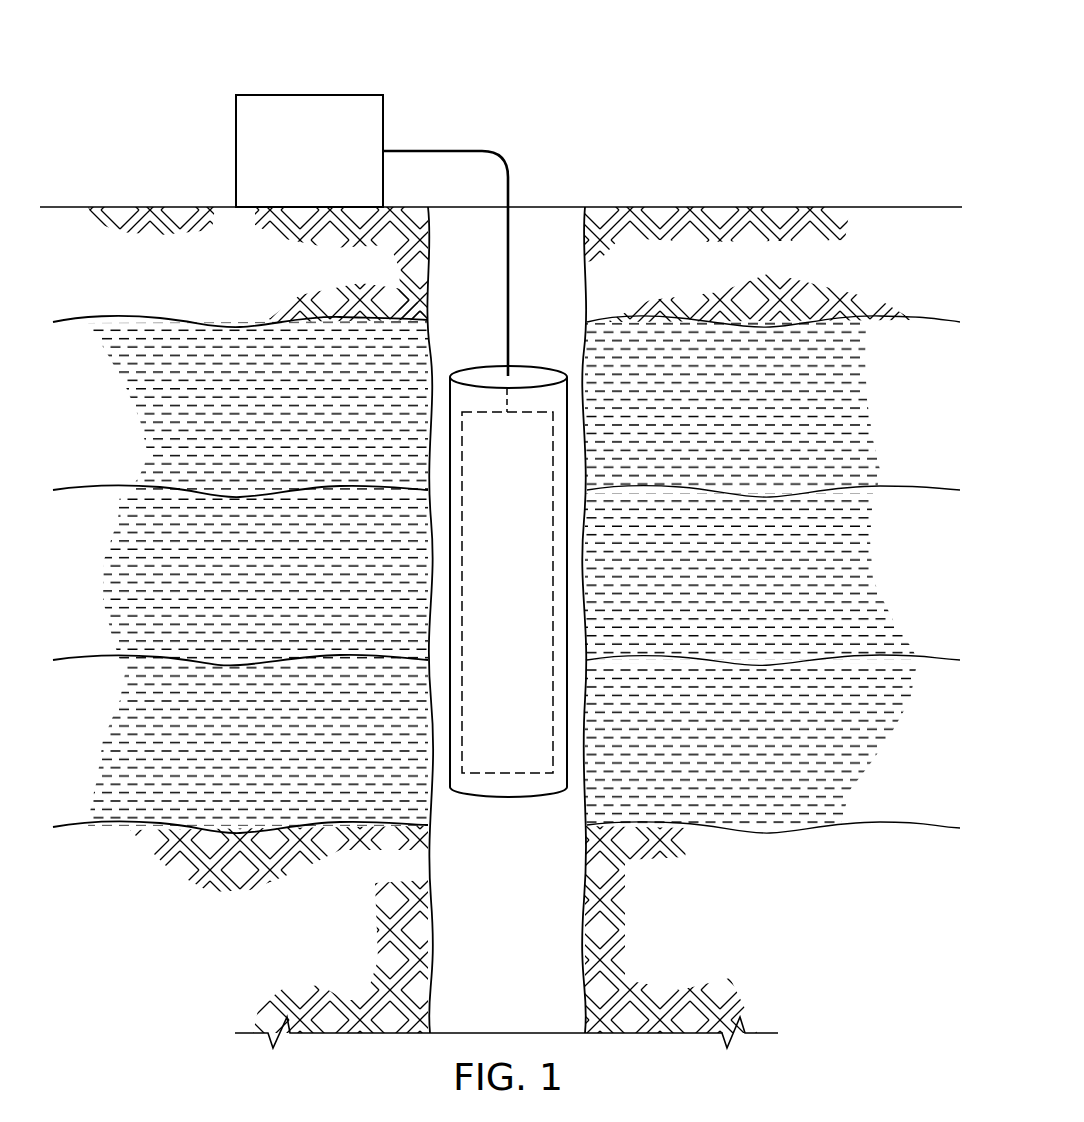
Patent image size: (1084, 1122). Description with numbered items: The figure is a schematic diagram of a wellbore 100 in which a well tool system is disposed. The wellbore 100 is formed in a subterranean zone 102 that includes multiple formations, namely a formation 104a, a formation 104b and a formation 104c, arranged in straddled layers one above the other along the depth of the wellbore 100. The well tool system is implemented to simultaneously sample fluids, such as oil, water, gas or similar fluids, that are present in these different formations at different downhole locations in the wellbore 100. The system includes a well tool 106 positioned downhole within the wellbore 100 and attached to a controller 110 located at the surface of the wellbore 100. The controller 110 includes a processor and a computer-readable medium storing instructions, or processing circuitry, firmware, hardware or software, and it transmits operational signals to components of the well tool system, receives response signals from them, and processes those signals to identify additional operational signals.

The wellbore 100 is at (581, 70).
The subterranean zone 102 is at (748, 951).
The formation 104a is at (744, 761).
The formation 104b is at (744, 591).
The formation 104c is at (744, 421).
The well tool 106 is at (508, 812).
The controller 110 is at (288, 166).